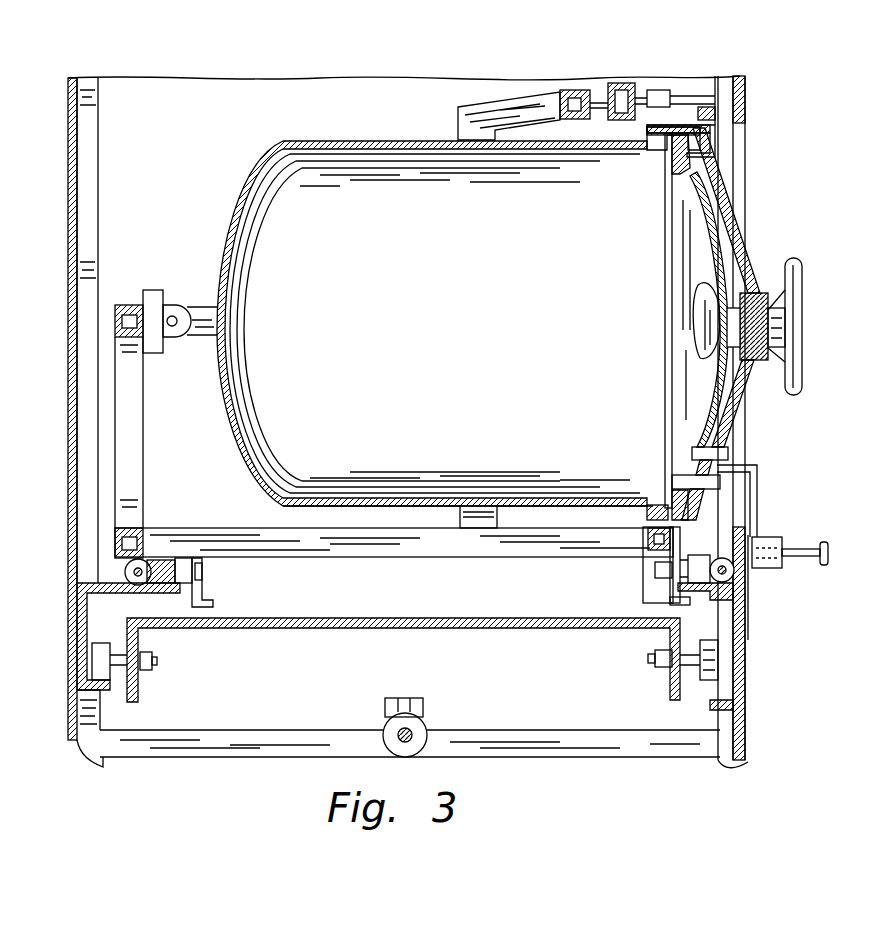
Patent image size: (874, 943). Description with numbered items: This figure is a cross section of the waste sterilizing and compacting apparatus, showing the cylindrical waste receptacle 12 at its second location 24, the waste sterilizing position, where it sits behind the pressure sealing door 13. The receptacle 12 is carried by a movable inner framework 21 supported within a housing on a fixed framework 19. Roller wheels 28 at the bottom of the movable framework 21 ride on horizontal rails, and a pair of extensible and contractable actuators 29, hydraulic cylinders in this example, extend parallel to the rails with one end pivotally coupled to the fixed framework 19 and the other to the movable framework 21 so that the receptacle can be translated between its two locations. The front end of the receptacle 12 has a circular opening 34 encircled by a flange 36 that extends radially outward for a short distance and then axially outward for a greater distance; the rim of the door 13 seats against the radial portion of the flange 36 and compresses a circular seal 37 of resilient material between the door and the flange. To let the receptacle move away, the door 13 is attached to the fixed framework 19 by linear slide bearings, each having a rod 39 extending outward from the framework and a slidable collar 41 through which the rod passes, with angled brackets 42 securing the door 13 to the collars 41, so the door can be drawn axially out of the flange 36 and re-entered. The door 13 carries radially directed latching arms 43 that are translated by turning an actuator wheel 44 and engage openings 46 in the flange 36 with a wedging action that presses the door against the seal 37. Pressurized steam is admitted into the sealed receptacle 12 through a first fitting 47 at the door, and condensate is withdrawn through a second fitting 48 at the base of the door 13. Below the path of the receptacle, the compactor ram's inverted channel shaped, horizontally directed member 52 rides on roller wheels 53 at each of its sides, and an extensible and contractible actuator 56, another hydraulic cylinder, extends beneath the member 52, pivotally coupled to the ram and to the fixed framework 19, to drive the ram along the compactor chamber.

The waste receptacle 12 is at (333, 142).
The pressure sealing door 13 is at (713, 232).
The fixed framework 19 is at (98, 240).
The movable inner framework 21 is at (392, 557).
The second location 24 is at (222, 167).
The roller wheels 28 is at (157, 570).
The extensible and contractable actuators 29 is at (143, 585).
The circular opening 34 is at (655, 152).
The flange 36 is at (660, 508).
The circular seal 37 is at (665, 240).
The rod 39 is at (800, 548).
The slidable collar 41 is at (767, 567).
The angled brackets 42 is at (760, 480).
The latching arms 43 is at (720, 197).
The actuator wheel 44 is at (793, 260).
The openings 46 is at (693, 106).
The first fitting 47 is at (730, 452).
The second fitting 48 is at (680, 475).
The horizontally directed member 52 is at (483, 627).
The roller wheels 53 is at (710, 667).
The extensible and contractible actuator 56 is at (425, 718).